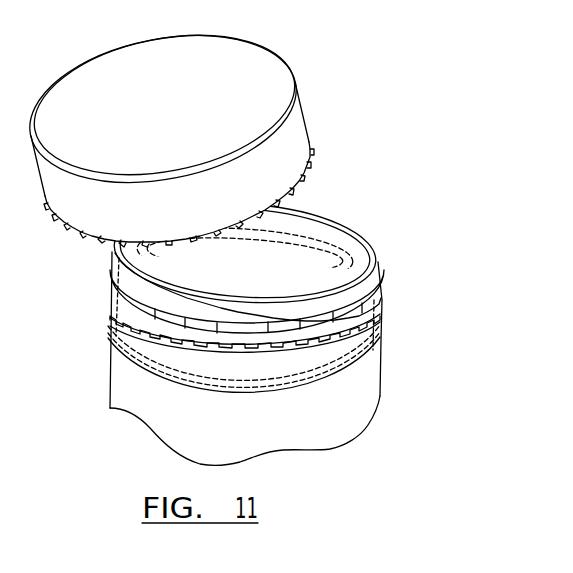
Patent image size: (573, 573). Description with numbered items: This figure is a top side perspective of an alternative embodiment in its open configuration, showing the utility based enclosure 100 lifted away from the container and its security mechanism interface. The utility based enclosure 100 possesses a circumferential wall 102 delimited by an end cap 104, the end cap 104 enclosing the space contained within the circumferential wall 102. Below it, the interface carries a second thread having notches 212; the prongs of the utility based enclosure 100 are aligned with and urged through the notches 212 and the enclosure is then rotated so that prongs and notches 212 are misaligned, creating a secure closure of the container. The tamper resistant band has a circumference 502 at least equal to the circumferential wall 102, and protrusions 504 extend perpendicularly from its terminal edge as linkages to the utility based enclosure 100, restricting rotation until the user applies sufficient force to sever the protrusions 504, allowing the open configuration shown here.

The utility based enclosure 100 is at (208, 240).
The circumferential wall 102 is at (202, 161).
The end cap 104 is at (142, 65).
The notches 212 is at (329, 243).
The circumference 502 is at (125, 320).
The protrusions 504 is at (88, 250).